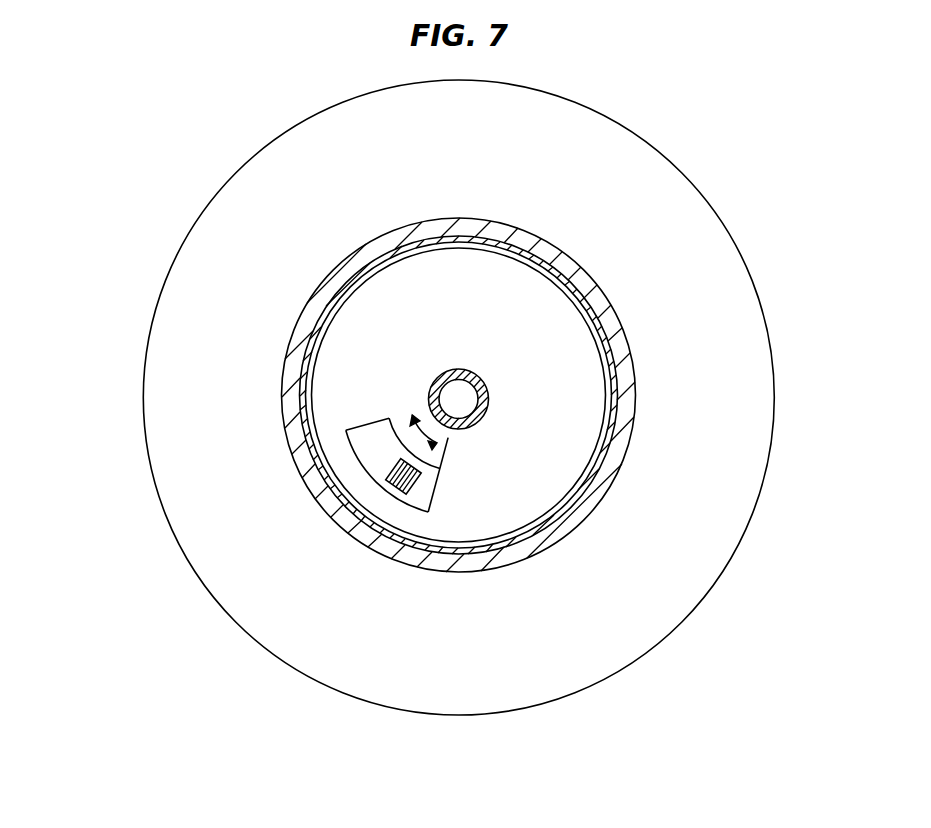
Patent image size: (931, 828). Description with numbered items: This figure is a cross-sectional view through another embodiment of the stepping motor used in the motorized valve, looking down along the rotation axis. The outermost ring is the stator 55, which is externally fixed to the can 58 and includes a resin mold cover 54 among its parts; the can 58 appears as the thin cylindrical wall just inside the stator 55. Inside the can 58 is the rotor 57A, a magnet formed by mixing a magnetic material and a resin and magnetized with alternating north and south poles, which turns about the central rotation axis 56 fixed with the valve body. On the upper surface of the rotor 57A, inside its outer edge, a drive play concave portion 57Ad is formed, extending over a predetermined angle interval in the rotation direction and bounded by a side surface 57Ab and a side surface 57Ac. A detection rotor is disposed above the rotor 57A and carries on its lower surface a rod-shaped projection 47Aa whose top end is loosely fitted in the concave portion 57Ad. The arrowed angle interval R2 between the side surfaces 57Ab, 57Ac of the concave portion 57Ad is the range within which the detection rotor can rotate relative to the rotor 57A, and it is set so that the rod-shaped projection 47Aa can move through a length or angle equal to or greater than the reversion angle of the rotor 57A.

The stator 55 is at (209, 187).
The resin mold cover 54 is at (310, 318).
The can 58 is at (303, 356).
The rotation axis 56 is at (603, 395).
The rotor 57A is at (490, 343).
The concave portion 57Ad is at (383, 430).
The side surface 57Ab is at (347, 432).
The side surface 57Ac is at (428, 512).
The rod-shaped projection 47Aa is at (386, 489).
The angle interval R2 is at (437, 443).